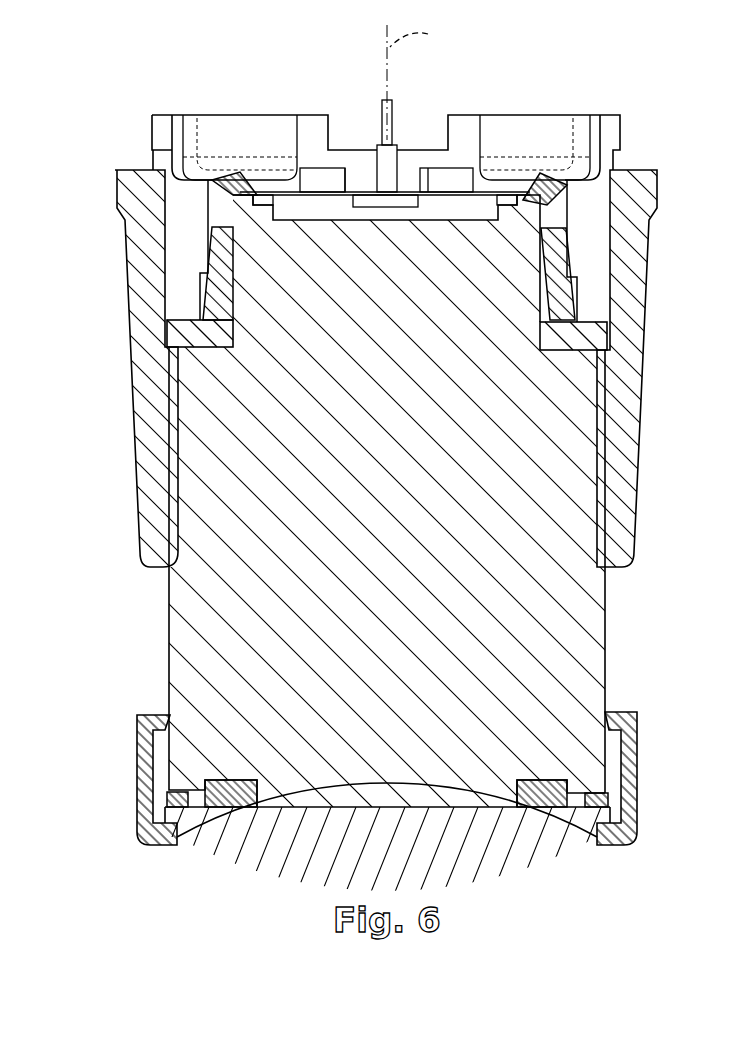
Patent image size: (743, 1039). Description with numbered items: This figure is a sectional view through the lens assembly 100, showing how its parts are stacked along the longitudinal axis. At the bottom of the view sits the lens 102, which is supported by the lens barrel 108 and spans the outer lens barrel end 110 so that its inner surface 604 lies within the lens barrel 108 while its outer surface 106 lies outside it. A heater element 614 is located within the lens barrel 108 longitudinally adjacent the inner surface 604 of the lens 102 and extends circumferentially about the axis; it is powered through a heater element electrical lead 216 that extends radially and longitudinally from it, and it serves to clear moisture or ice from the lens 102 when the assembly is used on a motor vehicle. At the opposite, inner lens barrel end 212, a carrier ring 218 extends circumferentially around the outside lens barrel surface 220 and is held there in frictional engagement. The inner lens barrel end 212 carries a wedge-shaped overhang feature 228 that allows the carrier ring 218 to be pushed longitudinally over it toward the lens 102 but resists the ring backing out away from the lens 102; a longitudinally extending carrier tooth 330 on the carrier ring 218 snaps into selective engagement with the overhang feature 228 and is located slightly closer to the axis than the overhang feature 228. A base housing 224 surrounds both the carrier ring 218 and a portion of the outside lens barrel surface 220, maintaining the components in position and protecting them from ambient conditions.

The lens assembly 100 is at (371, 465).
The lens 102 is at (412, 858).
The outer surface 106 is at (496, 883).
The lens barrel 108 is at (150, 657).
The outer lens barrel end 110 is at (130, 848).
The inner lens barrel end 212 is at (196, 210).
The heater element electrical lead 216 is at (403, 121).
The carrier ring 218 is at (586, 295).
The outside lens barrel surface 220 is at (545, 330).
The base housing 224 is at (122, 365).
The overhang feature 228 is at (233, 181).
The carrier tooth 330 is at (190, 260).
The inner surface 604 is at (479, 795).
The heater element 614 is at (546, 819).